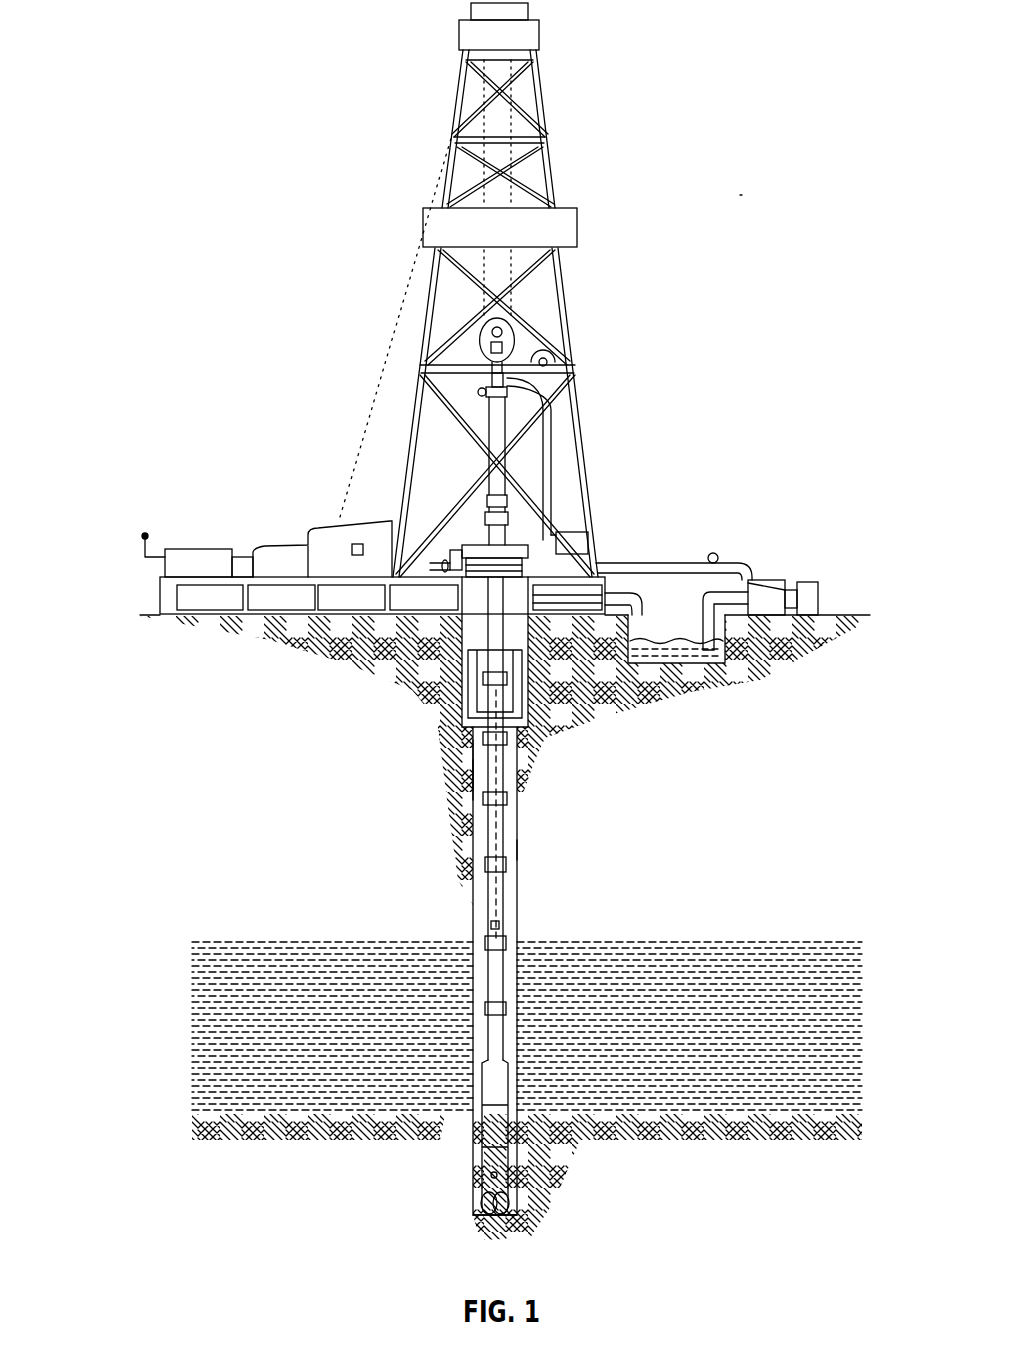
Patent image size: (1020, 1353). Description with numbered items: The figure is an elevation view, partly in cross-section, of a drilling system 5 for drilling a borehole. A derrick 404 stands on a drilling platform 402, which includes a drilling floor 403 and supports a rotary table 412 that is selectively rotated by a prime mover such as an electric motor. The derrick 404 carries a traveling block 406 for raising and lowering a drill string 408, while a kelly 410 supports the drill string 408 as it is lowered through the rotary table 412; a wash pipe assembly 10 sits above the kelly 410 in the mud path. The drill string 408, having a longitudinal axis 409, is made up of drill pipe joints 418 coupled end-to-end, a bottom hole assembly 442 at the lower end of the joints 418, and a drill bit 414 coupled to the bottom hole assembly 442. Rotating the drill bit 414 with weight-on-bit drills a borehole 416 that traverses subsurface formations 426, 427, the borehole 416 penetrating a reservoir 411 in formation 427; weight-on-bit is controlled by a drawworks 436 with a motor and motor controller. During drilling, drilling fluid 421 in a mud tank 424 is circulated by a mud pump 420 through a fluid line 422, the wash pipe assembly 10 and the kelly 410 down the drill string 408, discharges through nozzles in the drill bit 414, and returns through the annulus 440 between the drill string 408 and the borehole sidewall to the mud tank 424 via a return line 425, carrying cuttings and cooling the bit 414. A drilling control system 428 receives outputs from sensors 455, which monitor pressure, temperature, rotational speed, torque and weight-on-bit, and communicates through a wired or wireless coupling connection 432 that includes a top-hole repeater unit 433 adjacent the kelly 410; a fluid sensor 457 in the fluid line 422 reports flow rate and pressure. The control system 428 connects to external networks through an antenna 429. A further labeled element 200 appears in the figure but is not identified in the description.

The drilling system 5 is at (746, 192).
The wash pipe assembly 10 is at (490, 378).
The control unit / sensor connection 200 is at (478, 392).
The drilling platform 402 is at (162, 597).
The drilling floor 403 is at (426, 612).
The derrick 404 is at (546, 127).
The traveling block 406 is at (522, 323).
The drill string 408 is at (505, 766).
The longitudinal axis 409 is at (492, 760).
The kelly 410 is at (495, 418).
The reservoir 411 is at (518, 1220).
The rotary table 412 is at (472, 548).
The drill bit 414 is at (478, 1203).
The borehole 416 is at (519, 807).
The drill pipe joints 418 is at (498, 900).
The mud pump 420 is at (782, 581).
The drilling fluid 421 is at (656, 641).
The fluid line 422 is at (672, 565).
The mud tank 424 is at (687, 690).
The return line 425 is at (612, 595).
The subsurface formation 426 is at (205, 1030).
The subsurface formation 427 is at (280, 1134).
The drilling control system 428 is at (183, 549).
The antenna 429 is at (143, 552).
The coupling connection 432 is at (240, 557).
The top-hole repeater unit 433 is at (512, 500).
The drawworks 436 is at (333, 528).
The annulus 440 is at (514, 852).
The bottom hole assembly 442 is at (482, 1136).
The sensors 455 is at (503, 348).
The fluid sensor 457 is at (714, 556).